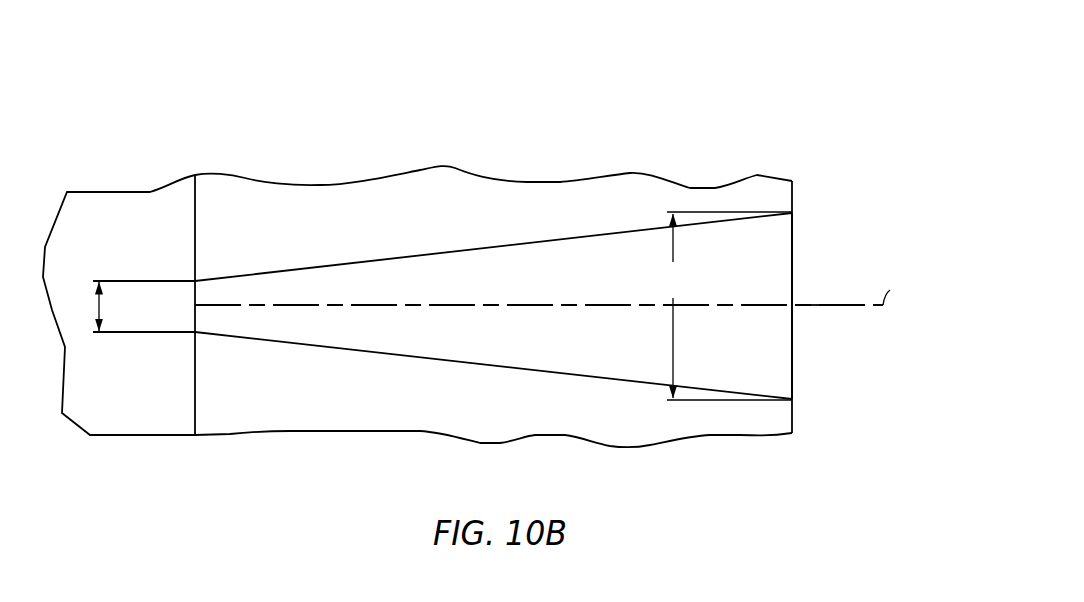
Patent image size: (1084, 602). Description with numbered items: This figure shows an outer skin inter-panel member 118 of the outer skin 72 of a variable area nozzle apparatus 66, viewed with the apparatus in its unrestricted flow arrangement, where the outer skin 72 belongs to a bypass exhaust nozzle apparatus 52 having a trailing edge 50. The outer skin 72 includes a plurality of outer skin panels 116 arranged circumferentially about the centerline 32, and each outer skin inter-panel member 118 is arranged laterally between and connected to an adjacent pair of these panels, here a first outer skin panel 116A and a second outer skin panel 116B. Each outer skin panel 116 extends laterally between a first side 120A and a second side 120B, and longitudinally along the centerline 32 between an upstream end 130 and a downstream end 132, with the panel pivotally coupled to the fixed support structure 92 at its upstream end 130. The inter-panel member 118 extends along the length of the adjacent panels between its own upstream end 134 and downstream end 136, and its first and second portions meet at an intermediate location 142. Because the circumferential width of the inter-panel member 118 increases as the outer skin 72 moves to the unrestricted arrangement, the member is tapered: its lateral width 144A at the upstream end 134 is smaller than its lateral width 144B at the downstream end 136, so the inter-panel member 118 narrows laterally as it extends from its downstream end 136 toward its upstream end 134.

The centerline 32 is at (900, 287).
The trailing edge 50 is at (793, 236).
The bypass exhaust nozzle apparatus 52 is at (799, 95).
The variable area nozzle apparatus 66 is at (501, 303).
The outer skin 72 is at (678, 136).
The support structure 92 is at (131, 165).
The outer skin panels 116 is at (493, 308).
The first outer skin panel 116A is at (325, 449).
The second outer skin panel 116B is at (316, 165).
The outer skin inter-panel member 118 is at (805, 355).
The first side 120A is at (489, 362).
The second side 120B is at (473, 251).
The upstream end 130 is at (193, 408).
The downstream end 132 is at (793, 416).
The upstream end 134 is at (193, 319).
The downstream end 136 is at (793, 265).
The intermediate location 142 is at (396, 307).
The lateral width at upstream end 144A is at (98, 306).
The lateral width at downstream end 144B is at (719, 306).